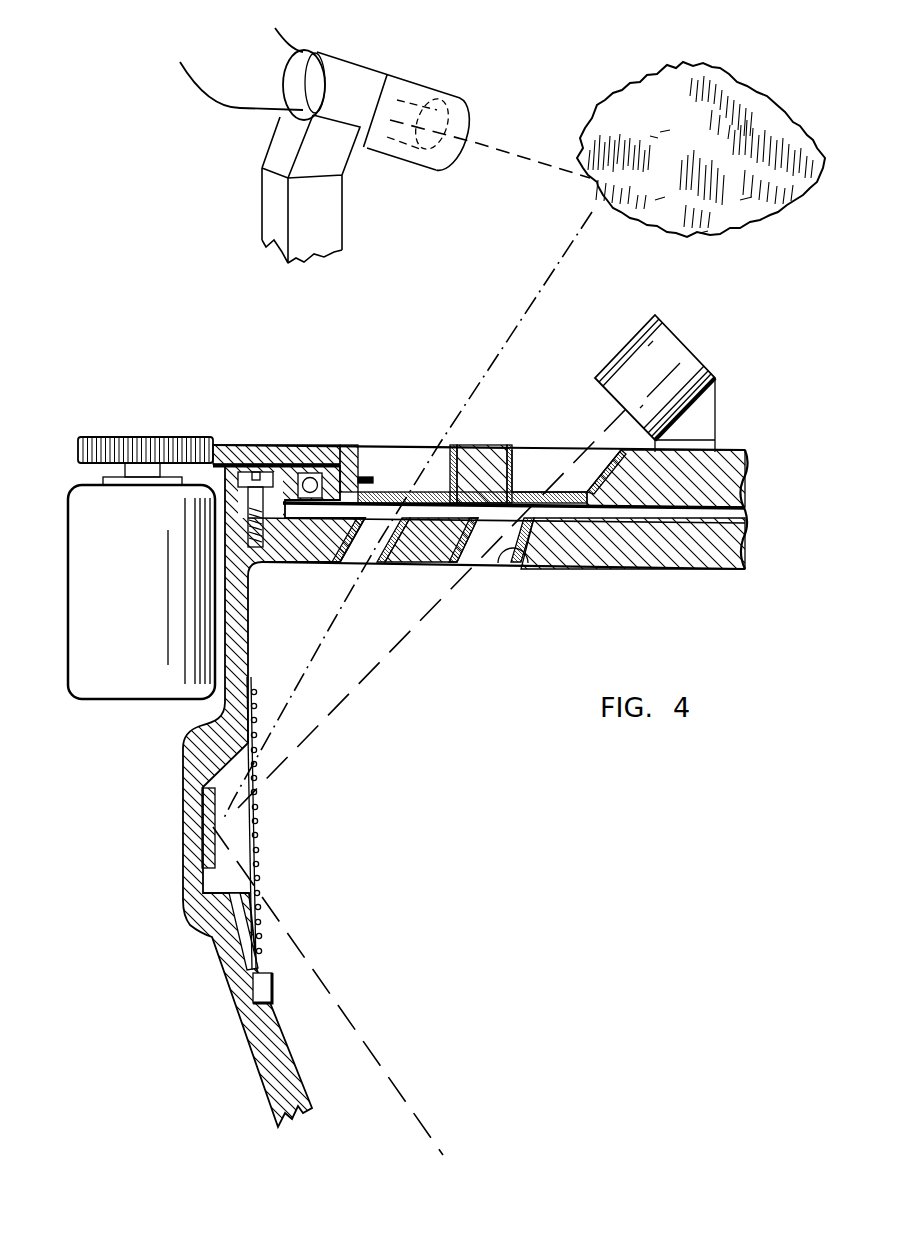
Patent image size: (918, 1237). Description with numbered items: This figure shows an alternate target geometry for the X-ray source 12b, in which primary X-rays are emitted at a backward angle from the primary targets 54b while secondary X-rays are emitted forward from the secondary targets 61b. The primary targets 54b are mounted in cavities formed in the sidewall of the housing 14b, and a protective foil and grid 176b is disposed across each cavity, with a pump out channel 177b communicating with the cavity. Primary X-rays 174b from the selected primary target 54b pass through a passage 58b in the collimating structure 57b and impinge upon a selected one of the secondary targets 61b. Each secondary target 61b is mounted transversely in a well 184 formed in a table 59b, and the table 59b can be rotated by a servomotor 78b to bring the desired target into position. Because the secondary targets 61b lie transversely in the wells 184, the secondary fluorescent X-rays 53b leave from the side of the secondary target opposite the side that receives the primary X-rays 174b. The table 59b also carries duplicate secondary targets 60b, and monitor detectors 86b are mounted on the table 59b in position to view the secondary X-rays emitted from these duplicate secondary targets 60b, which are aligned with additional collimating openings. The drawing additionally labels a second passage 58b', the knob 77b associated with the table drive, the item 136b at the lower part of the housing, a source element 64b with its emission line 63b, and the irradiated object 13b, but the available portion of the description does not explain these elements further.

The workpiece 13b is at (632, 96).
The light beam axis 63b is at (506, 150).
The light source 64b is at (403, 166).
The secondary fluorescent X-rays 53b is at (537, 293).
The monitor detectors 86b is at (630, 341).
The X-ray source 12b is at (759, 378).
The adjusting knob 77b is at (175, 424).
The table 59b is at (290, 445).
The well 184 is at (373, 448).
The secondary targets 61b is at (387, 492).
The duplicate secondary targets 60b is at (527, 487).
The servomotor 78b is at (136, 604).
The passage 58b is at (325, 566).
The support member notch 58b' is at (537, 581).
The primary X-rays 174b is at (427, 594).
The collimating structure 57b is at (660, 569).
The primary targets 54b is at (208, 802).
The protective foil and grid 176b is at (263, 807).
The slot 136b is at (230, 878).
The pump out channel 177b is at (263, 978).
The housing 14b is at (253, 1042).